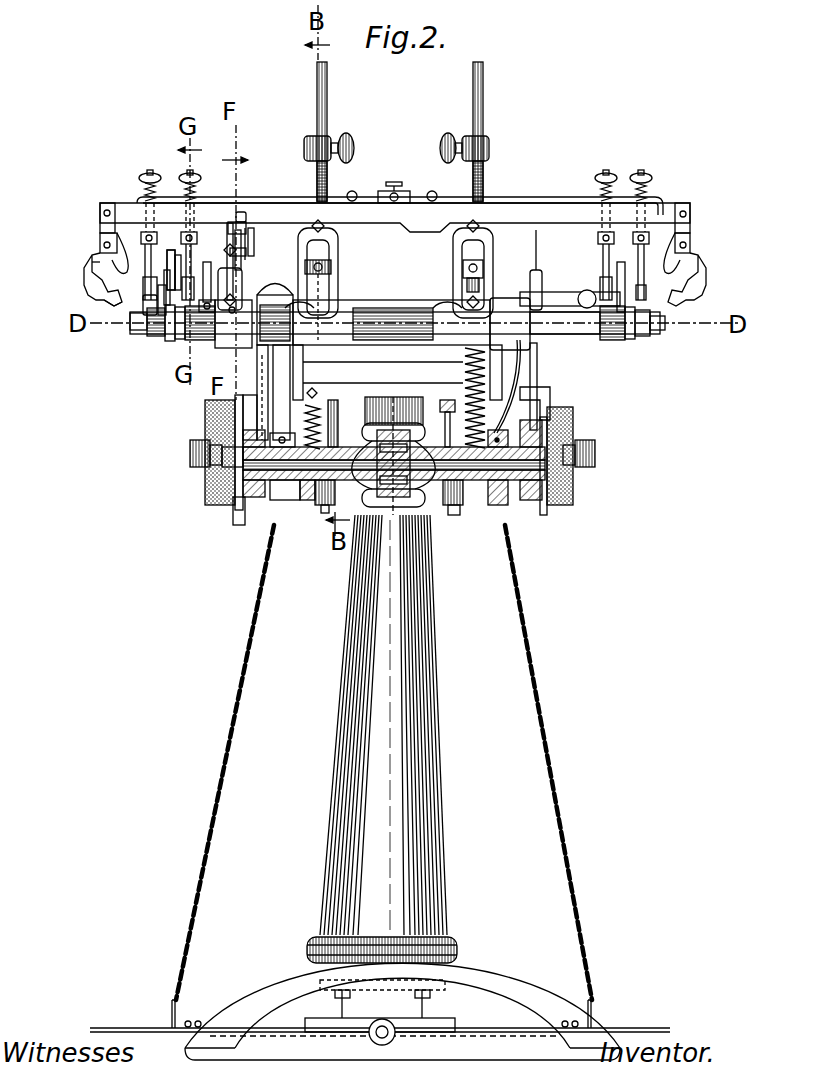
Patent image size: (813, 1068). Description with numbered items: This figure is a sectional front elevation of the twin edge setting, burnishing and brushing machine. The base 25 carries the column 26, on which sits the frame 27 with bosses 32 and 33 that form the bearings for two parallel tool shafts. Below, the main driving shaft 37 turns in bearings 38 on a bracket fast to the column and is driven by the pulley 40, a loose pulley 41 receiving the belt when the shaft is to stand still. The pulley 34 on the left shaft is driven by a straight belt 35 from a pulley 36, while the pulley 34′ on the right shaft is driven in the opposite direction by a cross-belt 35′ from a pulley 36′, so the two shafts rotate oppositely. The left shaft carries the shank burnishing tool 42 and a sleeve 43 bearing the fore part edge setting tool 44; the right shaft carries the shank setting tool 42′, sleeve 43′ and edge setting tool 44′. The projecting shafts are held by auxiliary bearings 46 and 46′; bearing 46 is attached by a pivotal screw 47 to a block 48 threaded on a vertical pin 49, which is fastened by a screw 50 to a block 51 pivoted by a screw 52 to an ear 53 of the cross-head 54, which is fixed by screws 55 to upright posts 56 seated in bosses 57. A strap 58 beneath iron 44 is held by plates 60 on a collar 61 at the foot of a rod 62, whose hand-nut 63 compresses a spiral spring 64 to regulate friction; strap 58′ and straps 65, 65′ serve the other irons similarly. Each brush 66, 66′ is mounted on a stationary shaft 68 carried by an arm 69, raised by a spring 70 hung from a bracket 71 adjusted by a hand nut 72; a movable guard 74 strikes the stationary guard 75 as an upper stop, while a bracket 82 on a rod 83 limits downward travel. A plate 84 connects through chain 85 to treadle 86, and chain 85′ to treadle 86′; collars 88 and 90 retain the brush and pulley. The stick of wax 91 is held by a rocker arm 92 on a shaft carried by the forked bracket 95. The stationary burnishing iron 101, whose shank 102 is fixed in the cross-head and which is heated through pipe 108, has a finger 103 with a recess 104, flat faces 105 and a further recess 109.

The base 25 is at (478, 971).
The column 26 is at (438, 791).
The frame 27 is at (395, 341).
The boss 32 is at (356, 309).
The boss 33 is at (445, 313).
The pulley 34 is at (280, 295).
The pulley 34′ is at (510, 300).
The straight belt 35 is at (255, 403).
The cross-belt 35′ is at (478, 346).
The pulley 36 is at (310, 500).
The pulley 36′ is at (500, 505).
The main driving shaft 37 is at (470, 500).
The bearing 38 is at (362, 513).
The pulley 40 is at (383, 666).
The loose pulley 41 is at (420, 445).
The shank burnishing tool 42 is at (140, 331).
The shank setting tool 42′ is at (666, 323).
The sleeve 43 is at (158, 336).
The sleeve 43′ is at (645, 339).
The fore part edge setting tool 44 is at (180, 340).
The fore part edge setting tool 44′ is at (630, 341).
The auxiliary bearing 46 is at (235, 348).
The auxiliary bearing 46′ is at (590, 337).
The pivotal screw 47 is at (245, 293).
The block 48 is at (232, 283).
The vertical pin 49 is at (248, 236).
The screw 50 is at (240, 231).
The block 51 is at (228, 262).
The pivotal screw 52 is at (252, 231).
The ear 53 is at (245, 231).
The cross-head 54 is at (482, 160).
The screw 55 is at (318, 203).
The upright post 56 is at (473, 68).
The boss 57 is at (540, 230).
The strap 58 is at (200, 341).
The strap 58′ is at (612, 343).
The plate 60 is at (170, 235).
The collar 61 is at (195, 240).
The rod 62 is at (190, 172).
The hand-nut 63 is at (182, 200).
The spiral spring 64 is at (195, 205).
The strap 65 is at (170, 341).
The strap 65′ is at (640, 337).
The brush 66 is at (230, 506).
The brush 66′ is at (578, 496).
The stationary shaft 68 is at (205, 463).
The arm 69 is at (338, 447).
The spring 70 is at (330, 175).
The bracket 71 is at (322, 138).
The hand nut 72 is at (350, 140).
The guard 74 is at (240, 526).
The stationary guard 75 is at (250, 399).
The bracket 82 is at (324, 505).
The rod 83 is at (326, 513).
The plate 84 is at (210, 501).
The chain 85 is at (206, 859).
The chain 85′ is at (565, 837).
The treadle 86 is at (150, 1029).
The treadle 86′ is at (620, 1031).
The collar 88 is at (222, 465).
The collar 90 is at (275, 389).
The stick of wax 91 is at (168, 276).
The rocker arm 92 is at (160, 291).
The forked bracket 95 is at (336, 269).
The stationary burnishing iron 101 is at (100, 250).
The shank 102 is at (167, 262).
The finger 103 is at (110, 293).
The recess 104 is at (118, 301).
The face 105 is at (105, 281).
The pipe 108 is at (435, 193).
The recess 109 is at (95, 271).